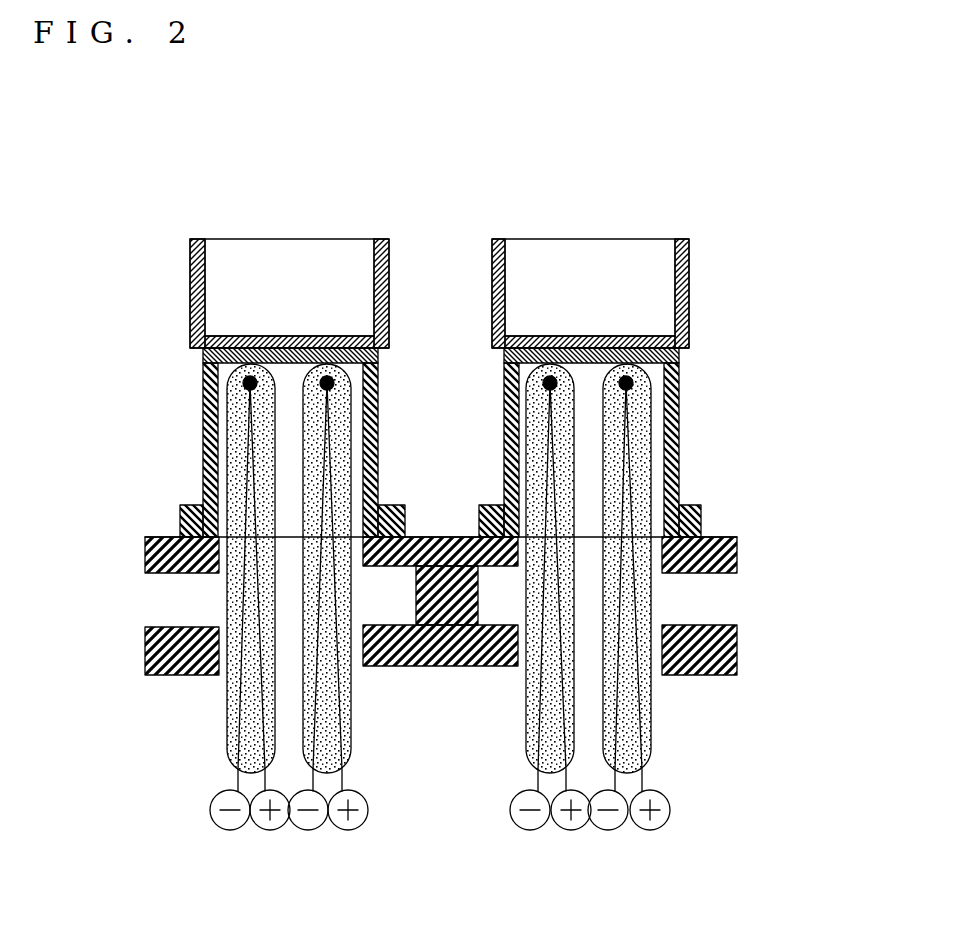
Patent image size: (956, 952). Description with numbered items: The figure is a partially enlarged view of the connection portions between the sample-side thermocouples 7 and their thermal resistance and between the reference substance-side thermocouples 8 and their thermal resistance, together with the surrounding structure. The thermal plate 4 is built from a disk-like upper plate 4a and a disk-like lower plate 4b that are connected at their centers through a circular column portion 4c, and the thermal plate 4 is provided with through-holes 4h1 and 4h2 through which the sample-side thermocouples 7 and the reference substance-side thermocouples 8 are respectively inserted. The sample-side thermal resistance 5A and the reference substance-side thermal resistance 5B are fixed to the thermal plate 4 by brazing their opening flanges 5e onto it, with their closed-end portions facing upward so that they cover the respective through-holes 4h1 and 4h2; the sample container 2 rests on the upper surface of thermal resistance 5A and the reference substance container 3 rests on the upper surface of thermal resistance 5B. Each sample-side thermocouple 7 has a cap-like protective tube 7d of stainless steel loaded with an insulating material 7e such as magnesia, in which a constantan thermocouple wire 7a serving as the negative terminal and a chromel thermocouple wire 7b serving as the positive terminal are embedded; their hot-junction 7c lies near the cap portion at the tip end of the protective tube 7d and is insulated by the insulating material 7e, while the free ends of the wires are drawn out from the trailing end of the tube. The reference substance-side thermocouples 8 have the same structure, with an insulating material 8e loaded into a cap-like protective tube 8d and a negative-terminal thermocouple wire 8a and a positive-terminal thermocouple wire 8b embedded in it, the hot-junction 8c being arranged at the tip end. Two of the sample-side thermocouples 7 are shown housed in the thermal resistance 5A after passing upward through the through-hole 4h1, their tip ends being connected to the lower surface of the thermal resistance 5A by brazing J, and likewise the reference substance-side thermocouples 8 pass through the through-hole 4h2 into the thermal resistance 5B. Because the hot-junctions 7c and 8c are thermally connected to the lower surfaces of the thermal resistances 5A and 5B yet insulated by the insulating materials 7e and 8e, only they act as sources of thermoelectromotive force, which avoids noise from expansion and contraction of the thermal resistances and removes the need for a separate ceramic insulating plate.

The sample container 2 is at (295, 250).
The reference substance container 3 is at (592, 250).
The brazing J is at (203, 355).
The thermal plate 4 is at (452, 605).
The upper plate 4a is at (147, 550).
The lower plate 4b is at (144, 645).
The circular column portion 4c is at (413, 592).
The through-hole 4h1 is at (220, 593).
The through-hole 4h2 is at (658, 590).
The sample-side thermal resistance 5A is at (378, 407).
The reference substance-side thermal resistance 5B is at (679, 402).
The opening flange 5e is at (180, 510).
The sample-side thermocouple 7 is at (243, 597).
The thermocouple wire 7a is at (240, 715).
The thermocouple wire 7b is at (260, 737).
The hot-junction 7c is at (246, 386).
The cap-like protective tube 7d is at (227, 705).
The insulating material 7e is at (232, 482).
The reference substance-side thermocouple 8 is at (630, 573).
The thermocouple wire 8a is at (622, 727).
The thermocouple wire 8b is at (653, 695).
The hot-junction 8c is at (640, 379).
The cap-like protective tube 8d is at (655, 727).
The insulating material 8e is at (645, 496).